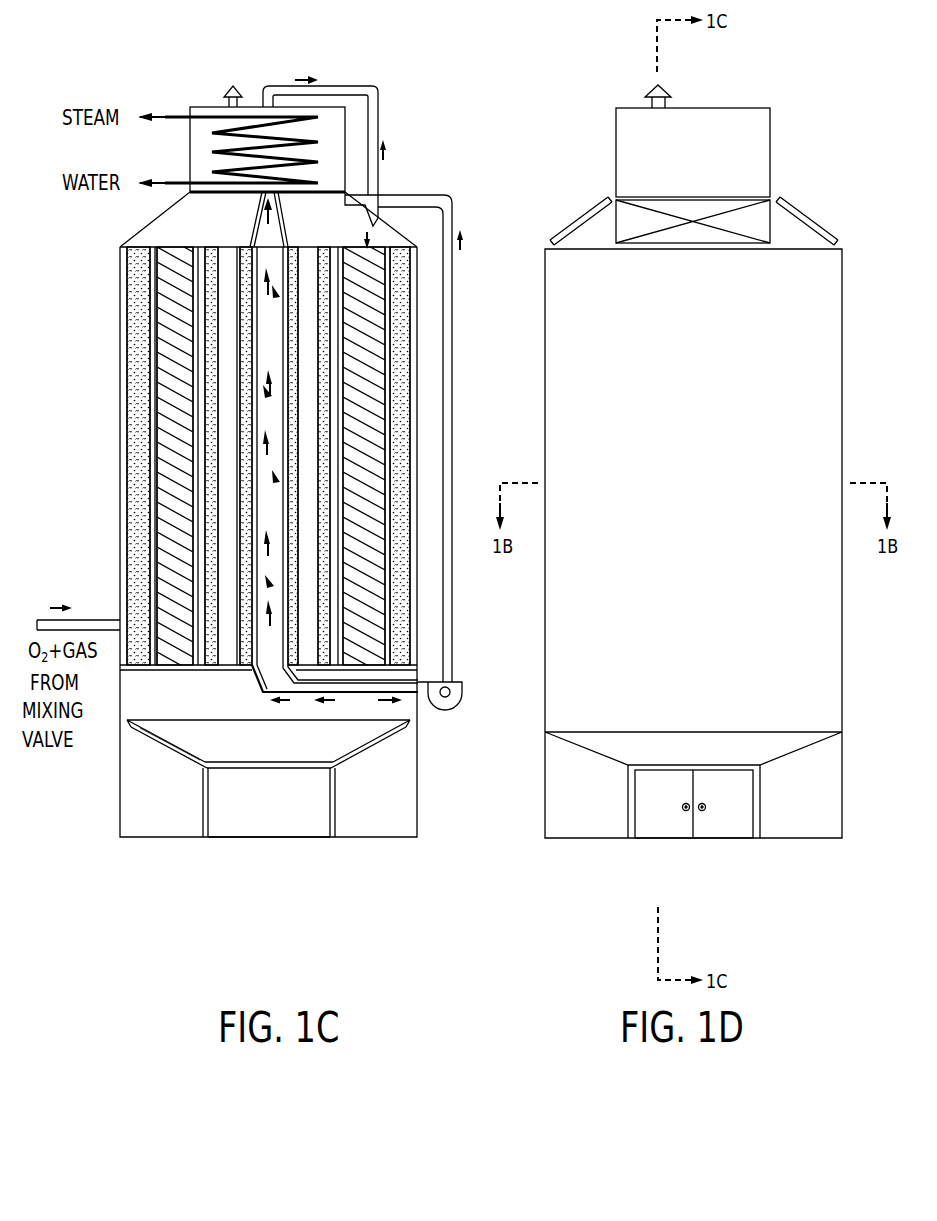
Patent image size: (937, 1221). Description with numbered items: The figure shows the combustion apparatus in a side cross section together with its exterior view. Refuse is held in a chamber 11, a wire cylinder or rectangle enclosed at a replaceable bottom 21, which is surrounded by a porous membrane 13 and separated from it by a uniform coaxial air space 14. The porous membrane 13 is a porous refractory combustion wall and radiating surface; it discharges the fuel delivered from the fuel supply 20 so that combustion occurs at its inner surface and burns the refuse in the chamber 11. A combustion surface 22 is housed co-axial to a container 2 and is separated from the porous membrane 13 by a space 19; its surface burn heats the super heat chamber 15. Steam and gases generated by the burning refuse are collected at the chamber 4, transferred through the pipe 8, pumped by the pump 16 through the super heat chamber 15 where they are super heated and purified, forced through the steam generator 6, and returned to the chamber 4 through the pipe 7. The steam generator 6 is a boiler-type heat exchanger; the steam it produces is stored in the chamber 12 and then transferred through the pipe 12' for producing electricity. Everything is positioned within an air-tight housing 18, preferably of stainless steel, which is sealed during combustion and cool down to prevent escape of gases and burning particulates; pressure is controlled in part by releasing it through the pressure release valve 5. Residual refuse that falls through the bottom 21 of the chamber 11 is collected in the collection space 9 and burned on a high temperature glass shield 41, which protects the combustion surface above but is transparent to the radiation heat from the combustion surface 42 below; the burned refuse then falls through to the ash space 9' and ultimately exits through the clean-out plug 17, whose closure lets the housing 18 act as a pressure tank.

In FIG. 1C, the container 2 is at (247, 278).
In FIG. 1C, the chamber 4 is at (190, 218).
In FIG. 1D, the pressure release valve 5 is at (663, 88).
In FIG. 1C, the steam generator 6 is at (260, 122).
In FIG. 1C, the pipe 7 is at (377, 107).
In FIG. 1C, the pipe 8 is at (417, 197).
In FIG. 1C, the collection space 9 is at (236, 770).
In FIG. 1C, the ash space 9' is at (269, 850).
In FIG. 1C, the chamber 11 is at (170, 493).
In FIG. 1C, the chamber 12 is at (232, 156).
In FIG. 1C, the pipe 12' is at (151, 121).
In FIG. 1C, the porous membrane 13 is at (210, 422).
In FIG. 1C, the coaxial air space 14 is at (200, 367).
In FIG. 1C, the super heat chamber 15 is at (260, 450).
In FIG. 1C, the pump 16 is at (463, 696).
In FIG. 1D, the clean-out plug 17 is at (678, 822).
In FIG. 1D, the air-tight housing 18 is at (843, 343).
In FIG. 1C, the space 19 is at (227, 523).
In FIG. 1C, the fuel supply 20 is at (103, 622).
In FIG. 1C, the bottom 21 is at (170, 670).
In FIG. 1C, the combustion surface 22 is at (253, 290).
In FIG. 1C, the high temperature glass shield 41 is at (188, 746).
In FIG. 1C, the combustion surface 42 is at (178, 755).